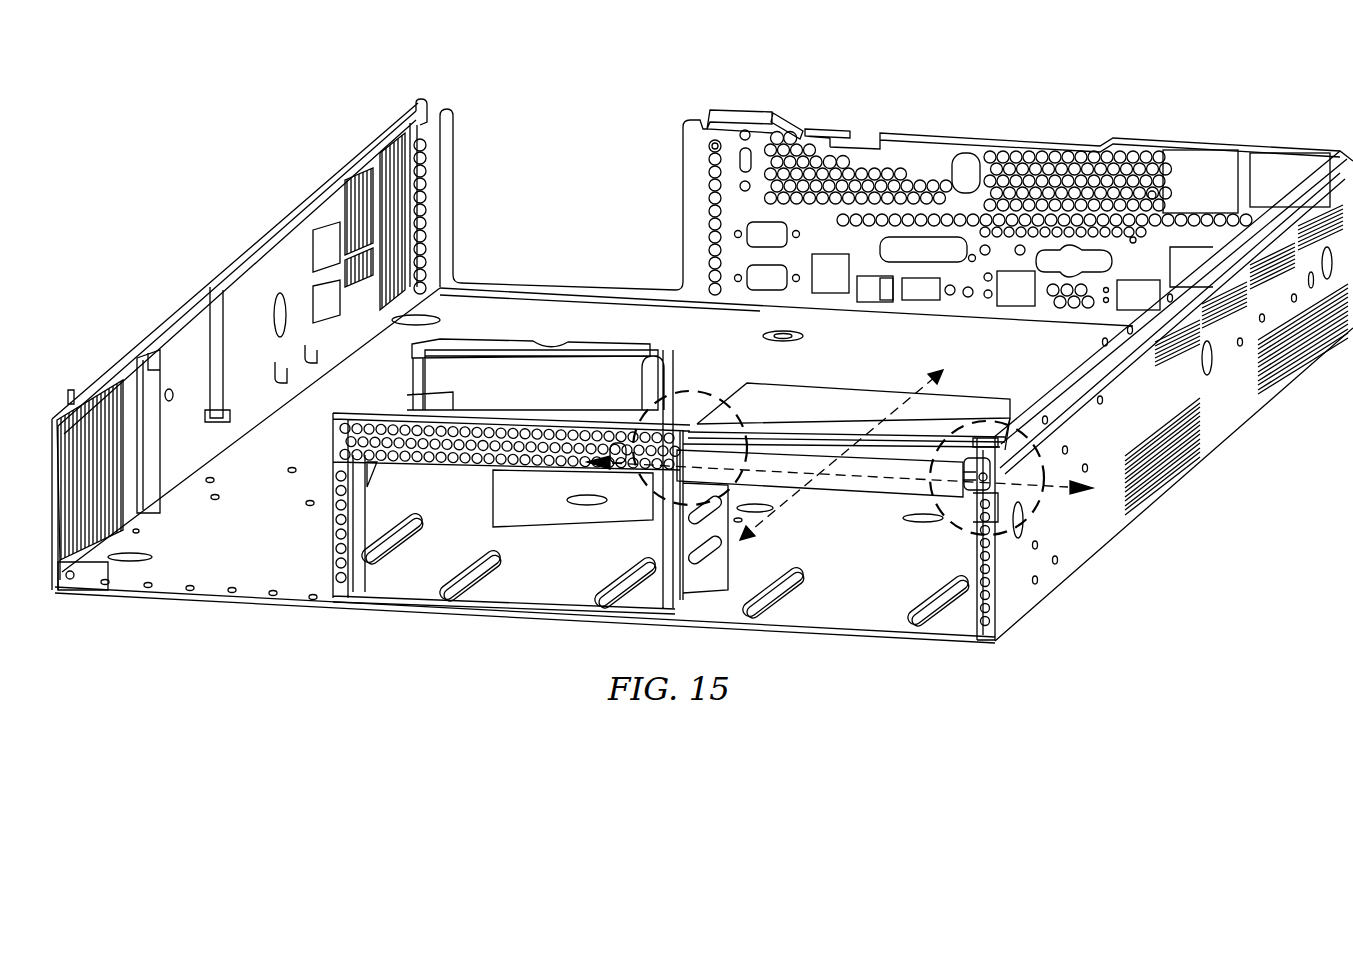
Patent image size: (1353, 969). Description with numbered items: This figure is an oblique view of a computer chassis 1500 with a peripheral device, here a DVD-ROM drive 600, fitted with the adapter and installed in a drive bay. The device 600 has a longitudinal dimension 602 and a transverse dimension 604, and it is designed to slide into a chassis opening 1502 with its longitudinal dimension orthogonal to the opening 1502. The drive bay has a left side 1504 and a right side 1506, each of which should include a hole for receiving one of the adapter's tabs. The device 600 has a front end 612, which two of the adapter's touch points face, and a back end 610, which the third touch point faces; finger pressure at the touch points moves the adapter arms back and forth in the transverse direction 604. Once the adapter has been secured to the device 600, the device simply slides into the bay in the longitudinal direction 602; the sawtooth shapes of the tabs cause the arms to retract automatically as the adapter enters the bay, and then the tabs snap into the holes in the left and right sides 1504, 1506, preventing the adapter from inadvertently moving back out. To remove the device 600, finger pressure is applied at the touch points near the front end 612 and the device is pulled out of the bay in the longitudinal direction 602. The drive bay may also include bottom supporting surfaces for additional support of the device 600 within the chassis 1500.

The computer chassis 1500 is at (747, 95).
The chassis opening 1502 is at (975, 547).
The left side of the drive bay 1504 is at (703, 392).
The right side of the drive bay 1506 is at (1047, 460).
The DVD-ROM drive 600 is at (827, 397).
The longitudinal dimension 602 is at (765, 522).
The transverse dimension 604 is at (1053, 490).
The back end 610 is at (963, 392).
The front end 612 is at (863, 494).